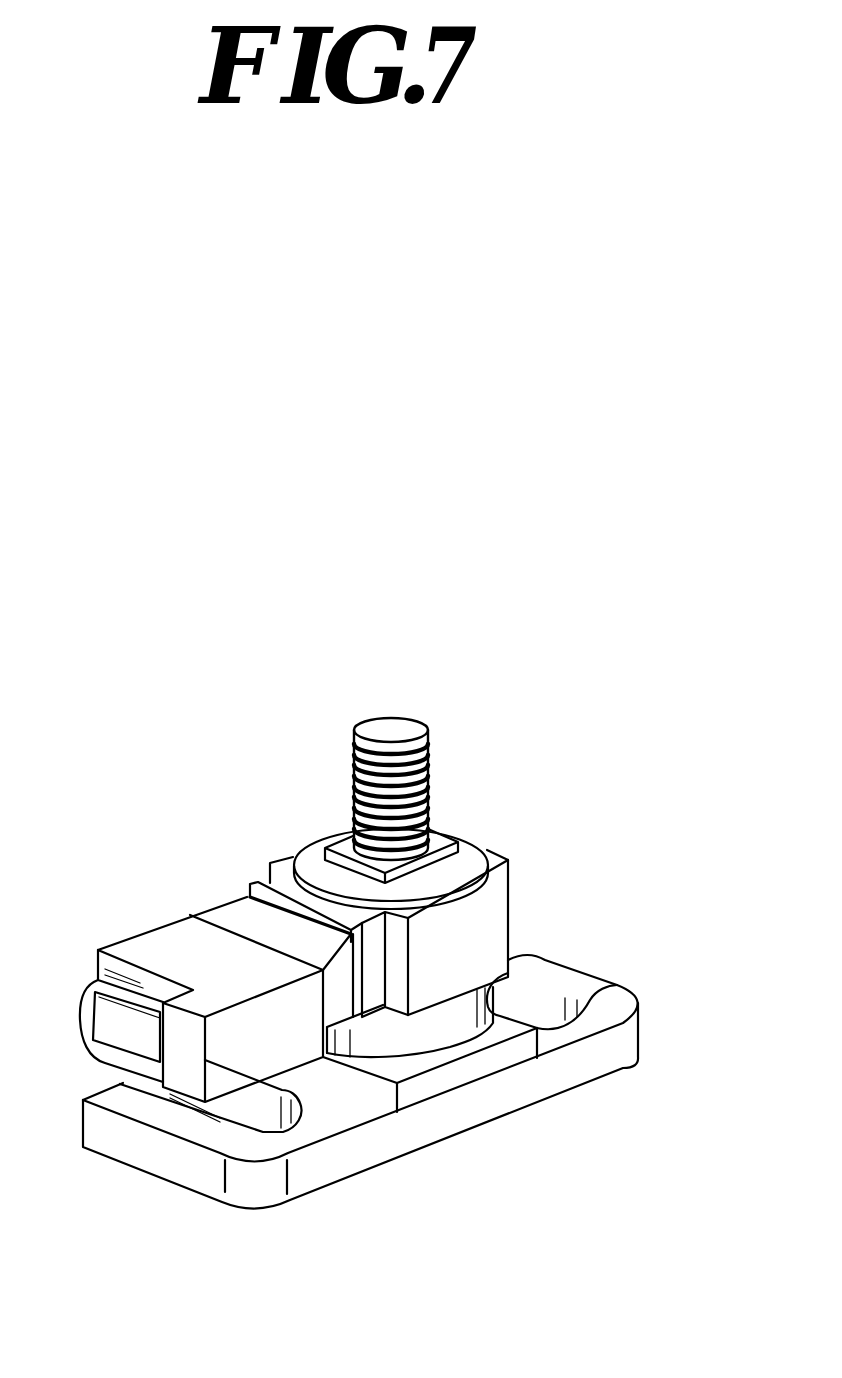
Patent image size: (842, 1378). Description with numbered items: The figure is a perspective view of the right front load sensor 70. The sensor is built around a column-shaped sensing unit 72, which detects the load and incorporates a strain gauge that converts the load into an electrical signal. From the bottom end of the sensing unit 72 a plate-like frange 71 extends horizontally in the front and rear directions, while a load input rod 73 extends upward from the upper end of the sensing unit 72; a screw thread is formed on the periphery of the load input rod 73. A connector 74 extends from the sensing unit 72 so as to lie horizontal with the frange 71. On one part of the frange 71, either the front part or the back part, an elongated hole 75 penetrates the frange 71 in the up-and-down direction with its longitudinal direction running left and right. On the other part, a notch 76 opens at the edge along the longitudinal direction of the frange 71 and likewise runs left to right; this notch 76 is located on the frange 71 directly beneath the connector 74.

The right front load sensor 70 is at (484, 620).
The frange 71 is at (478, 1102).
The sensing unit 72 is at (487, 907).
The load input rod 73 is at (428, 766).
The connector 74 is at (173, 960).
The elongated hole 75 is at (628, 988).
The notch 76 is at (238, 1104).